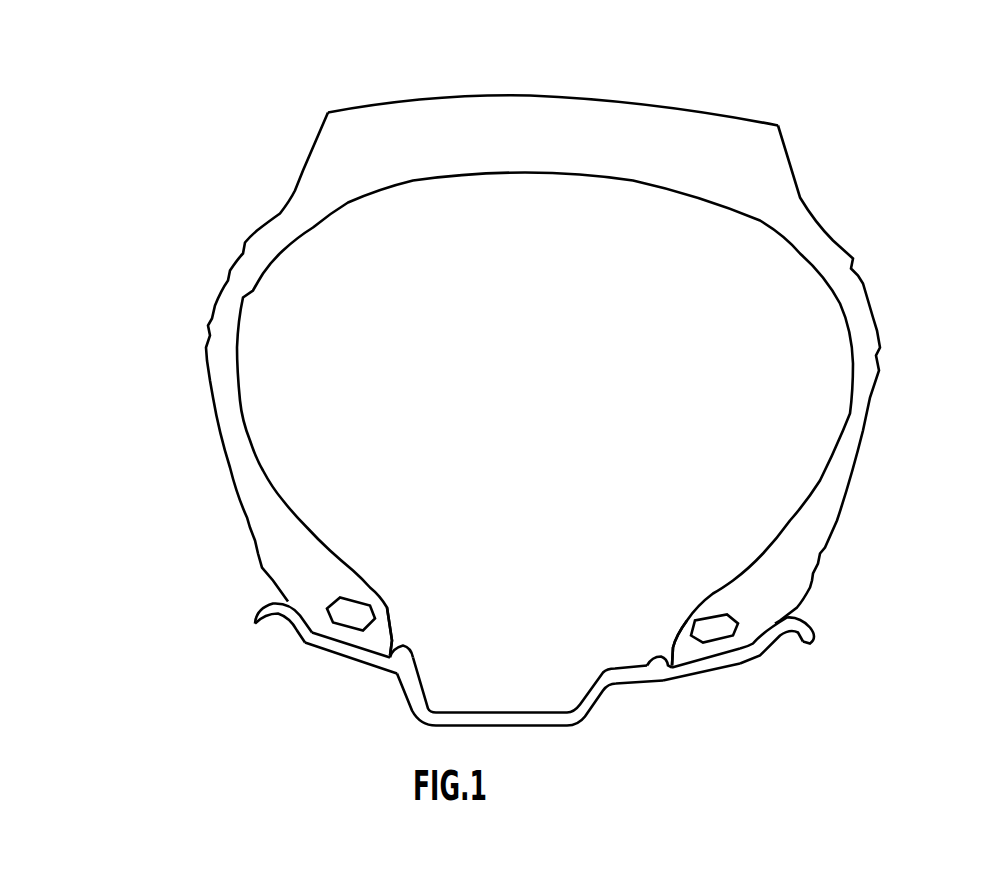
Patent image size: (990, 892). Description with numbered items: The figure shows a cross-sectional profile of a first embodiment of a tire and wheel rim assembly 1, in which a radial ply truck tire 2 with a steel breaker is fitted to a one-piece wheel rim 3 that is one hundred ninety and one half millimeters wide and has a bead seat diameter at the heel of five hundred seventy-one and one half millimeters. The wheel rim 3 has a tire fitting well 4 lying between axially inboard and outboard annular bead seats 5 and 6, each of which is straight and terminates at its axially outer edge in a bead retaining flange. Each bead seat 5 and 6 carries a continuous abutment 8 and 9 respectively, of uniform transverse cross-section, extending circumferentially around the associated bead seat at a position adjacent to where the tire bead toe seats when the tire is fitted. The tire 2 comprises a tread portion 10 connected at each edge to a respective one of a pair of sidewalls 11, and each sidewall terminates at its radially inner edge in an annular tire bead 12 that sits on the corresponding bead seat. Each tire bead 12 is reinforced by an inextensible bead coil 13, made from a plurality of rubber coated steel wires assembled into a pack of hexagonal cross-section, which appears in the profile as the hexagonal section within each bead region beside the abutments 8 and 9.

The tire and wheel rim assembly 1 is at (556, 380).
The radial ply truck tire 2 is at (855, 287).
The wheel rim 3 is at (567, 664).
The tire fitting well 4 is at (505, 710).
The inboard annular bead seat 5 is at (740, 650).
The outboard annular bead seat 6 is at (355, 643).
The continuous abutment 8 is at (645, 665).
The continuous abutment 9 is at (403, 652).
The tread portion 10 is at (737, 132).
The sidewalls 11 is at (223, 398).
The annular tire bead 12 is at (367, 592).
The inextensible bead coil 13 is at (368, 618).